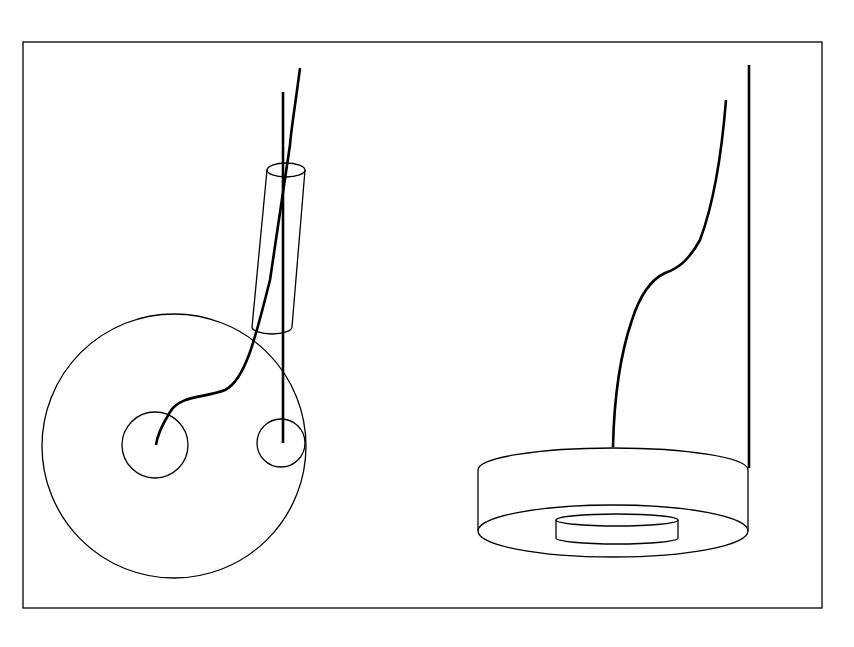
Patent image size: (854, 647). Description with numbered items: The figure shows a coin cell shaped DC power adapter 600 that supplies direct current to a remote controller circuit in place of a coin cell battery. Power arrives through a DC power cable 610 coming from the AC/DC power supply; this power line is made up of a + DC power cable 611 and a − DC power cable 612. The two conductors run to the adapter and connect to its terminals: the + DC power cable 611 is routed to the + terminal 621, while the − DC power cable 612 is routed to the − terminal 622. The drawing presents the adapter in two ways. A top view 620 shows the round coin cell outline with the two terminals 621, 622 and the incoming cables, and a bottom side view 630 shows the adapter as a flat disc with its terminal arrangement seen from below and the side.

The coin cell shaped DC power adapter 600 is at (422, 307).
The DC power cable 610 is at (425, 248).
The + DC power cable 611 is at (749, 78).
The − DC power cable 612 is at (726, 118).
The top view 620 is at (174, 431).
The + terminal 621 is at (748, 468).
The − terminal 622 is at (555, 528).
The bottom side view 630 is at (626, 517).